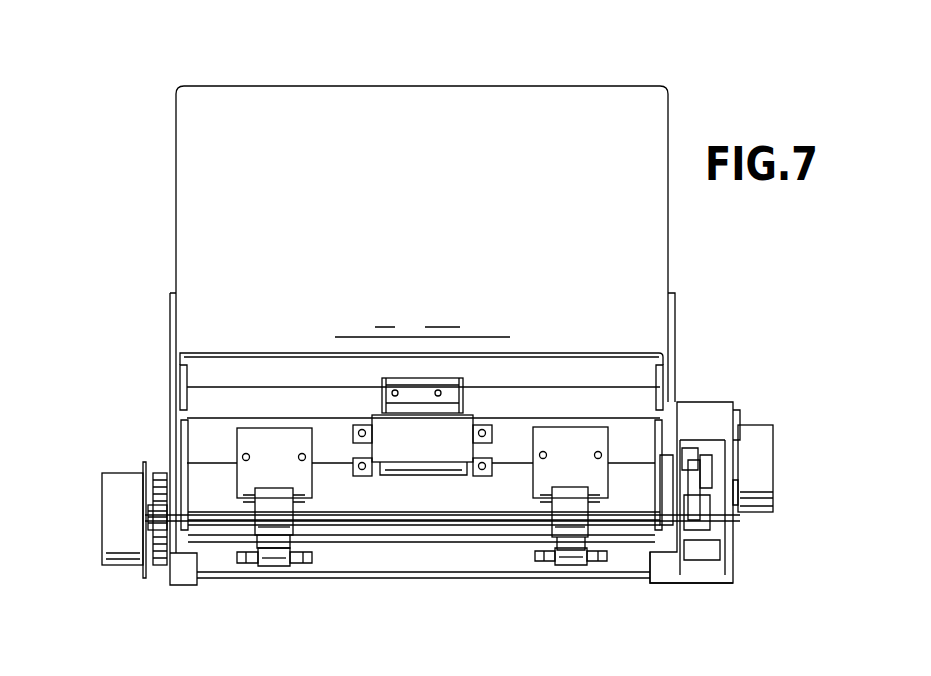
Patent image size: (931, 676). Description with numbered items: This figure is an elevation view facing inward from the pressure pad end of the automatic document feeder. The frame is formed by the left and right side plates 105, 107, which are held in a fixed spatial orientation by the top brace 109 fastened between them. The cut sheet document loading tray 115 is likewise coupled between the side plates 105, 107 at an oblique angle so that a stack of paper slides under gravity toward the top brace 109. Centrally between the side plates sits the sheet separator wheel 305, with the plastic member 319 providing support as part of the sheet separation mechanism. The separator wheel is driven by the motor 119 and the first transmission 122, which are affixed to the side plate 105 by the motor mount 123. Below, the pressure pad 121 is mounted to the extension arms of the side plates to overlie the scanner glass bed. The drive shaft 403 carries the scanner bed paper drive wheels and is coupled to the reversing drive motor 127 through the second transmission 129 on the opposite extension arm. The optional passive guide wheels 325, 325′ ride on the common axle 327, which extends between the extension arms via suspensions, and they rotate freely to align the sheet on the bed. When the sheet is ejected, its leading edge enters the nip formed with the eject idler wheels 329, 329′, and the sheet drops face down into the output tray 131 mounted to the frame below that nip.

The cut sheet document loading tray 115 is at (385, 100).
The side plate 107 is at (168, 316).
The side plate 105 is at (678, 300).
The pressure pad 121 is at (362, 545).
The common axle 327 is at (497, 528).
The top brace 109 is at (495, 347).
The plastic member 319 is at (420, 420).
The sheet separator wheel 305 is at (422, 475).
The passive guide wheel 325′ is at (278, 490).
The eject idler wheel 329′ is at (275, 567).
The passive guide wheel 325 is at (575, 492).
The eject idler wheel 329 is at (575, 567).
The drive motor 127 is at (102, 515).
The second transmission 129 is at (160, 567).
The drive shaft 403 is at (155, 500).
The motor mount 123 is at (722, 400).
The first transmission 122 is at (705, 440).
The motor 119 is at (760, 518).
The output tray 131 is at (628, 583).